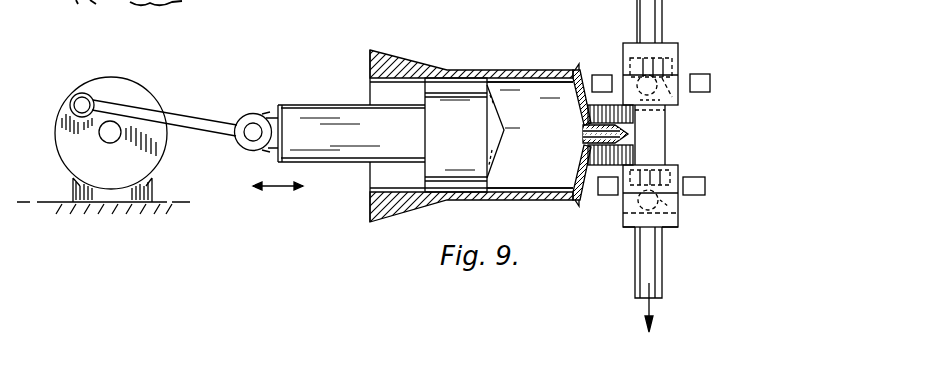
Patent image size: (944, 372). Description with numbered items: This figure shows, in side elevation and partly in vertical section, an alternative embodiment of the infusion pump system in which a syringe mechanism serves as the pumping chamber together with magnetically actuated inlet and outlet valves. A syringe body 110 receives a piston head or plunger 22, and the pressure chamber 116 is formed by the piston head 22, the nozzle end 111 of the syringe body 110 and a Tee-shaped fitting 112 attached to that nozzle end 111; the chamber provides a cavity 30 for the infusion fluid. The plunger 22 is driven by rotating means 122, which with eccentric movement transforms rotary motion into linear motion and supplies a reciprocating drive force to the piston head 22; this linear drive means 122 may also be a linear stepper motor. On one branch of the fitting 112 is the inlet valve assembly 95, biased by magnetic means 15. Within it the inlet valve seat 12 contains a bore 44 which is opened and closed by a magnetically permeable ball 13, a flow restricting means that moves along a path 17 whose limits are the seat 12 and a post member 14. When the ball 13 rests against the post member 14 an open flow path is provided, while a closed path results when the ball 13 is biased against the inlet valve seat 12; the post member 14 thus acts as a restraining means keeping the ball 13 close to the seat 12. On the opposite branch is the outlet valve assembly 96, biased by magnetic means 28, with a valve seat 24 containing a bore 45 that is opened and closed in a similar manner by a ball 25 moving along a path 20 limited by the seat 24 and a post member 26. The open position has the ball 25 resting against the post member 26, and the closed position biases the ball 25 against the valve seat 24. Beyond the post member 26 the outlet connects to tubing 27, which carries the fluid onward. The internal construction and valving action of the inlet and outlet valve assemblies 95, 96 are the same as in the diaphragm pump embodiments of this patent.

The rotating means 122 is at (137, 100).
The syringe body 110 is at (398, 55).
The piston head 22 is at (454, 82).
The pressure chamber 116 is at (510, 80).
The cavity 30 is at (541, 90).
The nozzle end 111 is at (580, 68).
The magnetic means 15 is at (603, 75).
The bore 44 is at (650, 58).
The inlet valve seat 12 is at (678, 45).
The inlet valve assembly 95 is at (680, 58).
The ball 13 is at (682, 103).
The path 17 is at (668, 110).
The post member 14 is at (667, 121).
The Tee-shaped fitting 112 is at (667, 143).
The bore 45 is at (652, 167).
The outlet valve seat 24 is at (679, 170).
The ball 25 is at (679, 208).
The path 20 is at (640, 215).
The post member 26 is at (679, 218).
The outlet valve assembly 96 is at (623, 207).
The magnetic means 28 is at (602, 197).
The tubing 27 is at (660, 272).